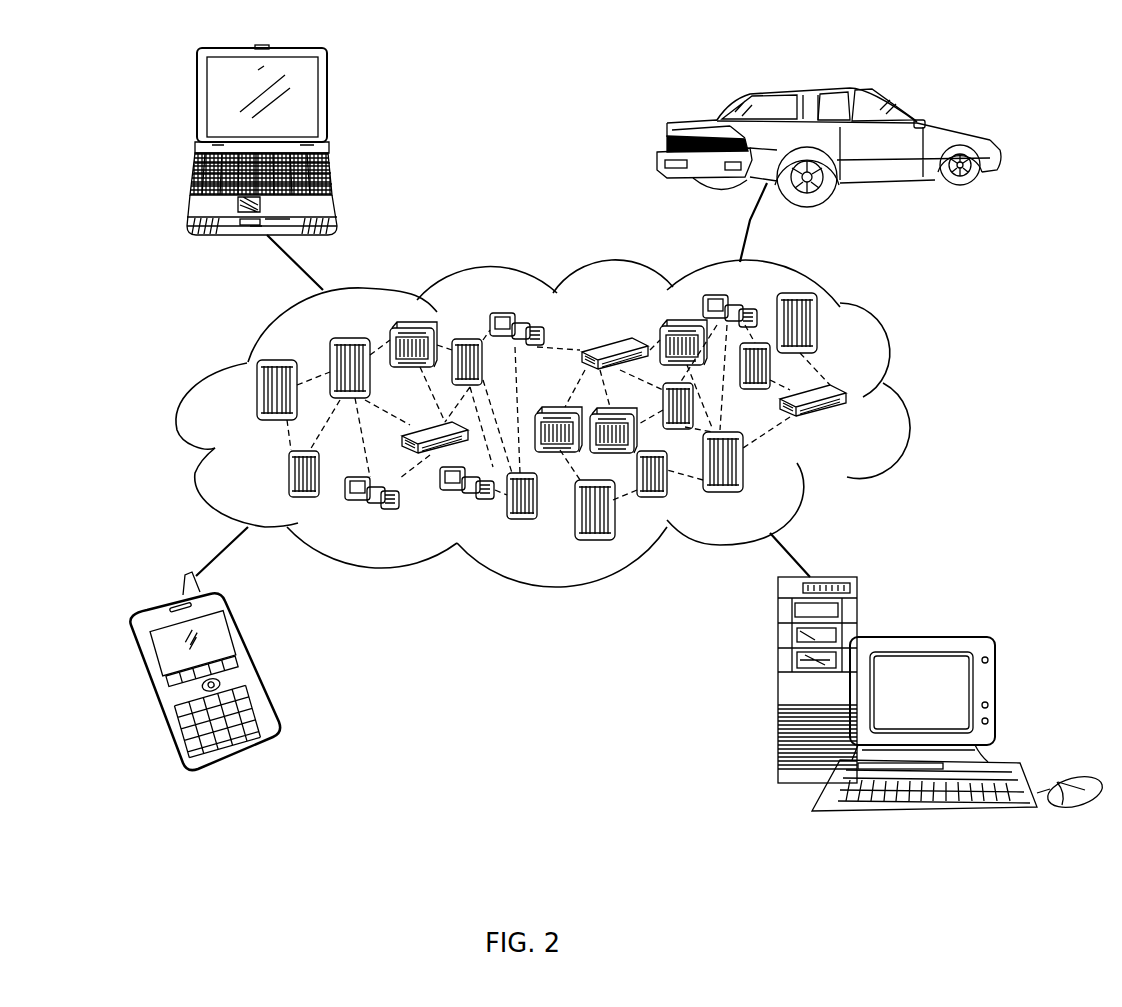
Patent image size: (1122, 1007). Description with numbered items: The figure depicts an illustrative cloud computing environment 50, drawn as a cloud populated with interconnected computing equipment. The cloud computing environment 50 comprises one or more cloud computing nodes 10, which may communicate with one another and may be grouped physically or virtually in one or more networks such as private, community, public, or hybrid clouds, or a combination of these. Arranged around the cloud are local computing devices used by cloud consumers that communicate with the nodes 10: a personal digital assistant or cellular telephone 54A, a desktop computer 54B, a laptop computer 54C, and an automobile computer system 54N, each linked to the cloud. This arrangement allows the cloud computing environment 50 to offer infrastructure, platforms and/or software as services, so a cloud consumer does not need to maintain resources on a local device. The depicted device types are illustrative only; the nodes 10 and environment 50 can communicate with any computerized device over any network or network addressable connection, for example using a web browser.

The cloud computing nodes 10 is at (857, 442).
The cloud computing environment 50 is at (883, 330).
The personal digital assistant or cellular telephone 54A is at (149, 682).
The desktop computer 54B is at (927, 637).
The laptop computer 54C is at (197, 105).
The automobile computer system 54N is at (907, 108).